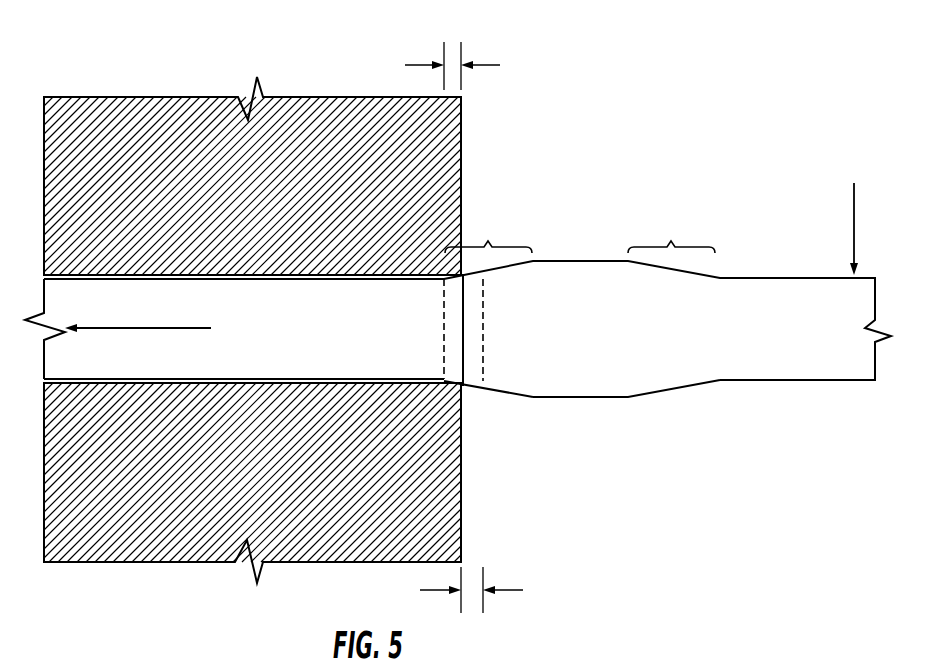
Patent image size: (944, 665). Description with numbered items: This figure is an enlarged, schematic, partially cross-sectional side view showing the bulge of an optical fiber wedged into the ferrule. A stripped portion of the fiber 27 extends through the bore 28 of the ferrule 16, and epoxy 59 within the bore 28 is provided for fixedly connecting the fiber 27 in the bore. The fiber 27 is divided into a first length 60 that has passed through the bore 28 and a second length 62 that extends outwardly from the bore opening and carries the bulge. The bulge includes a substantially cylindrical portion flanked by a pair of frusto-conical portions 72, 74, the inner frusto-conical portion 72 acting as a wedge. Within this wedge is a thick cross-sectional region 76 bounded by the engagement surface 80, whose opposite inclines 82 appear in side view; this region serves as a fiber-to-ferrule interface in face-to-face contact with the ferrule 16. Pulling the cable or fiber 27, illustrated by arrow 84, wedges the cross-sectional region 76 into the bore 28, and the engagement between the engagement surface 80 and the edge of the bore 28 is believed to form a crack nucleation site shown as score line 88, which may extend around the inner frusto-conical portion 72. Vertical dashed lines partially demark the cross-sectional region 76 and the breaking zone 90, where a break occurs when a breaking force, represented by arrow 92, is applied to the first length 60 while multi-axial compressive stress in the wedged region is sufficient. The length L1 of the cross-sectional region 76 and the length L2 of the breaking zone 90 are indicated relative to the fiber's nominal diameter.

The ferrule 16 is at (274, 95).
The bore 28 is at (260, 268).
The epoxy 59 is at (283, 275).
The second length 62 is at (401, 277).
The first length 60 is at (769, 244).
The fiber 27 is at (773, 397).
The frusto-conical portion 72 is at (488, 232).
The frusto-conical portion 74 is at (671, 232).
The arrow 92 is at (854, 212).
The cross-sectional region 76 is at (449, 334).
The arrow 84 is at (156, 328).
The score line 88 is at (463, 365).
The breaking zone 90 is at (478, 353).
The engagement surface 80 is at (447, 384).
The inclines 82 is at (488, 389).
The length of the cross-sectional region L1 is at (452, 52).
The length of the breaking zone L2 is at (472, 612).